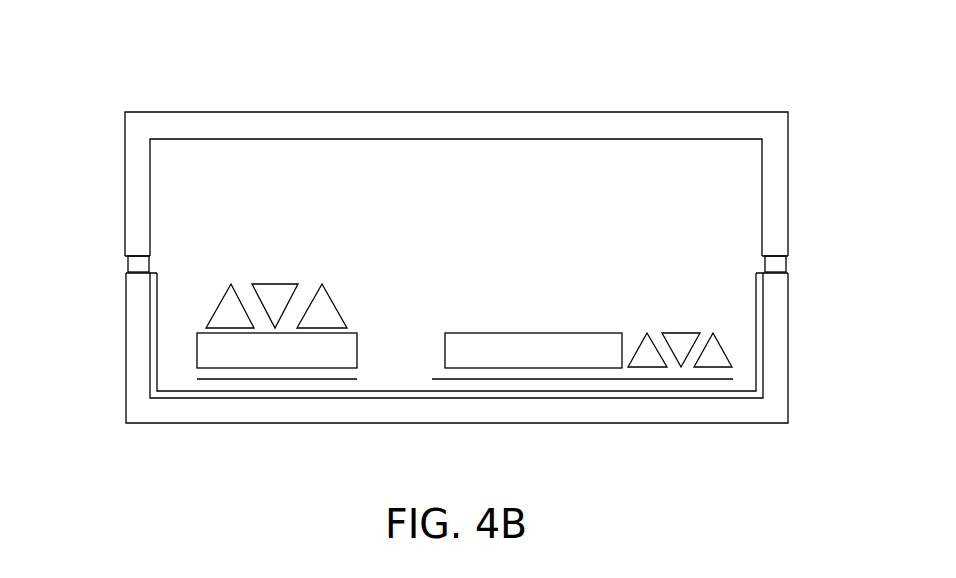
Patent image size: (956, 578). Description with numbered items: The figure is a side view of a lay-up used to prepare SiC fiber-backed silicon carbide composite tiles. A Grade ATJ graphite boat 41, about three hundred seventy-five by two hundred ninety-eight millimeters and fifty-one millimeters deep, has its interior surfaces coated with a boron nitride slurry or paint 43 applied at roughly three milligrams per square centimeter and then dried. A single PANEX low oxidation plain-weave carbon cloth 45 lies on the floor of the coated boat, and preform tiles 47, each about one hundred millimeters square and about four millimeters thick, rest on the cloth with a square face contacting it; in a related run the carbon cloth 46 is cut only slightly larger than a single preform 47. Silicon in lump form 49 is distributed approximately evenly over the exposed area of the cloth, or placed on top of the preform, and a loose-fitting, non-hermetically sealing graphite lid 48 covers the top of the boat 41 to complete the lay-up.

The graphite boat 41 is at (770, 407).
The boron nitride paint 43 is at (757, 320).
The carbon cloth 45 is at (446, 382).
The carbon cloth 46 is at (200, 382).
The preform tile 47 is at (207, 353).
The graphite lid 48 is at (142, 122).
The silicon in lump form 49 is at (228, 314).